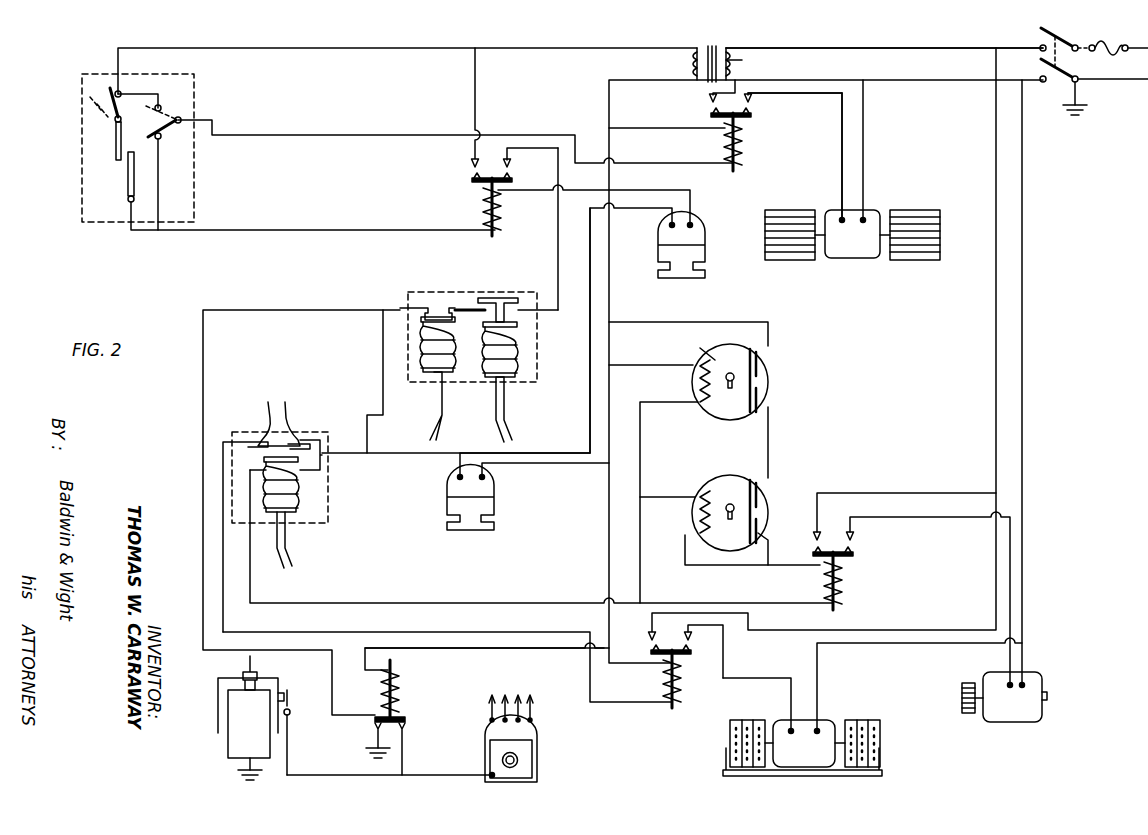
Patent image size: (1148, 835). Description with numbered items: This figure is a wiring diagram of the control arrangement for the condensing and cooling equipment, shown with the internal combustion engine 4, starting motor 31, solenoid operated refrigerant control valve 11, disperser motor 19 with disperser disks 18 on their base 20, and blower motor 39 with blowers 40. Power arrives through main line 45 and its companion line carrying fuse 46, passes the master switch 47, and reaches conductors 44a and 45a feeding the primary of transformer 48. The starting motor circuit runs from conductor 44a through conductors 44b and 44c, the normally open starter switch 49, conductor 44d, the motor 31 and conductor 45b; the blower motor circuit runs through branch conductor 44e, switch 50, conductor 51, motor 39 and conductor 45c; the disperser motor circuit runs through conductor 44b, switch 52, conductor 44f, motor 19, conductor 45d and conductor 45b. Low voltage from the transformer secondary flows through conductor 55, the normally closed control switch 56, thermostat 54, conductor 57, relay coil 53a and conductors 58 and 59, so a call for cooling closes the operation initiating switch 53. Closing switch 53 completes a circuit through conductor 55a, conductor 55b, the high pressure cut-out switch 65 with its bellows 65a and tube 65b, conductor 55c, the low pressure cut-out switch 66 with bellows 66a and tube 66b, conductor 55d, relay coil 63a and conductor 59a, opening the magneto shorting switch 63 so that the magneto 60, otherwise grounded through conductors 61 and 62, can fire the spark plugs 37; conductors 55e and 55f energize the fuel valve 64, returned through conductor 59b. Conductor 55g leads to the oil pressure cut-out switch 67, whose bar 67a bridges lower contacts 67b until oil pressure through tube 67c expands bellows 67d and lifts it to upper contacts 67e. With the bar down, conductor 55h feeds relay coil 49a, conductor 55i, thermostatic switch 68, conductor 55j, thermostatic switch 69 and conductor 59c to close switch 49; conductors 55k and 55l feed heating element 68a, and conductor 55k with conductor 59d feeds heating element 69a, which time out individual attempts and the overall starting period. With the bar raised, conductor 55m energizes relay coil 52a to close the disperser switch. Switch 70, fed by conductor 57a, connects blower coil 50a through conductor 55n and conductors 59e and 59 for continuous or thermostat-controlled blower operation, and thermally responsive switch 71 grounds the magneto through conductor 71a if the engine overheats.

The internal combustion engine 4 is at (214, 698).
The solenoid operated refrigerant control valve 11 is at (700, 240).
The disperser disks 18 is at (730, 738).
The disperser motor 19 is at (828, 722).
The battery base plate 20 is at (882, 770).
The starting motor 31 is at (1008, 722).
The engine spark plugs 37 is at (242, 668).
The blower motor 39 is at (870, 210).
The blowers 40 is at (798, 212).
The conductor 44a is at (890, 48).
The conductor 44b is at (996, 320).
The conductor 44c is at (903, 493).
The conductor 44d is at (968, 520).
The branch conductor 44e is at (742, 64).
The conductor 44f is at (762, 678).
The main line 45 is at (1120, 82).
The conductor 45a is at (925, 93).
The conductor 45b is at (1024, 314).
The conductor 45c is at (865, 128).
The conductor 45d is at (906, 643).
The fuse 46 is at (1102, 45).
The master control switch 47 is at (1058, 30).
The transformer 48 is at (718, 40).
The starter motor switch 49 is at (830, 536).
The relay coil 49a is at (845, 580).
The blower switch 50 is at (708, 110).
The blower switch operating coil 50a is at (745, 135).
The conductor 51 is at (840, 152).
The disperser motor switch 52 is at (700, 642).
The relay coil 52a is at (682, 702).
The operation initiating switch 53 is at (468, 166).
The relay coil 53a is at (484, 205).
The thermostat 54 is at (108, 135).
The conductor 55 is at (322, 48).
The conductor 55a is at (482, 104).
The conductor 55b is at (558, 258).
The conductor 55c is at (462, 308).
The conductor 55d is at (318, 310).
The conductor 55e is at (383, 386).
The conductor 55f is at (590, 340).
The conductor 55g is at (378, 455).
The conductor 55h is at (470, 590).
The conductor 55i is at (776, 560).
The conductor 55j is at (770, 420).
The conductor 55k is at (640, 436).
The conductor 55l is at (665, 497).
The conductor 55m is at (288, 626).
The conductor 55n is at (300, 135).
The manually operable control switch 56 is at (105, 84).
The conductor 57 is at (128, 214).
The conductor 57a is at (160, 200).
The conductor 58 is at (640, 192).
The conductor 59 is at (609, 100).
The conductor 59a is at (520, 648).
The conductor 59b is at (578, 463).
The conductor 59c is at (714, 322).
The conductor 59d is at (658, 365).
The conductor 59e is at (660, 128).
The engine magneto 60 is at (540, 722).
The conductor 61 is at (420, 775).
The conductor 62 is at (404, 746).
The magneto shorting switch 63 is at (410, 712).
The relay coil 63a is at (400, 680).
The solenoid operated valve 64 is at (490, 495).
The high pressure cut-out switch 65 is at (500, 296).
The bellows 65a is at (518, 350).
The tube 65b is at (508, 420).
The low pressure cut-out switch 66 is at (430, 305).
The bellows 66a is at (425, 360).
The tube 66b is at (432, 432).
The oil pressure cut-out switch 67 is at (256, 425).
The conducting bar 67a is at (258, 450).
The lower contacts 67b is at (258, 470).
The tube 67c is at (290, 565).
The pressure responsive bellows element 67d is at (300, 508).
The upper contacts 67e is at (266, 428).
The thermostatic switch 68 is at (760, 500).
The heating element 68a is at (690, 512).
The thermostatic switch 69 is at (762, 370).
The heating element 69a is at (714, 352).
The switch 70 is at (172, 138).
The thermally responsive switch 71 is at (292, 700).
The conductor 71a is at (322, 775).